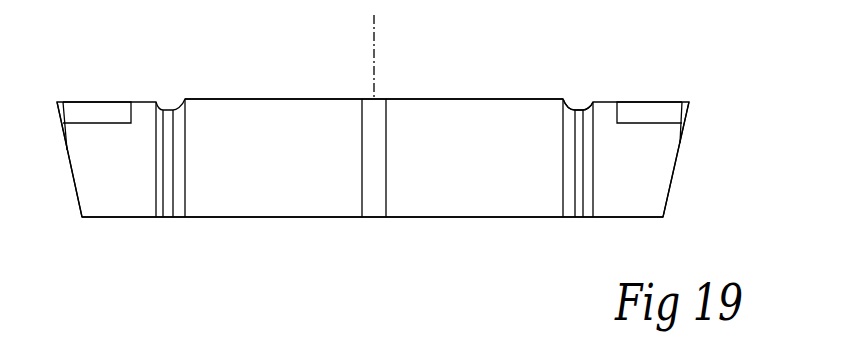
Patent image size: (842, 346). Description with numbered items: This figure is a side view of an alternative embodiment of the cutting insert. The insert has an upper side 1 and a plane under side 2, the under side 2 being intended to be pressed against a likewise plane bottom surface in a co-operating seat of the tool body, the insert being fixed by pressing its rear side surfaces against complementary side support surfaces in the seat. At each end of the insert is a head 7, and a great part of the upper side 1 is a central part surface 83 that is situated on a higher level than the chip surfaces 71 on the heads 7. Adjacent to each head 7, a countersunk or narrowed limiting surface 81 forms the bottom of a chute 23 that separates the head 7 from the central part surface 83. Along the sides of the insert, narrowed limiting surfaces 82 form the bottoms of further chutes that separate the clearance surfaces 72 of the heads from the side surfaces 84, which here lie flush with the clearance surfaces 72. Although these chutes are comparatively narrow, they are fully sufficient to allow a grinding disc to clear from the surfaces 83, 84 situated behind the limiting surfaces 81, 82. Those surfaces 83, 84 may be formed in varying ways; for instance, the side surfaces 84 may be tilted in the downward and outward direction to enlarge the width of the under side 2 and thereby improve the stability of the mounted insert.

The upper side 1 is at (265, 66).
The under side 2 is at (270, 238).
The head 7 is at (61, 225).
The chute 23 is at (583, 102).
The chip surface 71 is at (97, 102).
The clearance surface 72 is at (125, 173).
The limiting surface 81 is at (574, 109).
The limiting surface 82 is at (167, 161).
The central part surface 83 is at (446, 99).
The side surface 84 is at (302, 158).